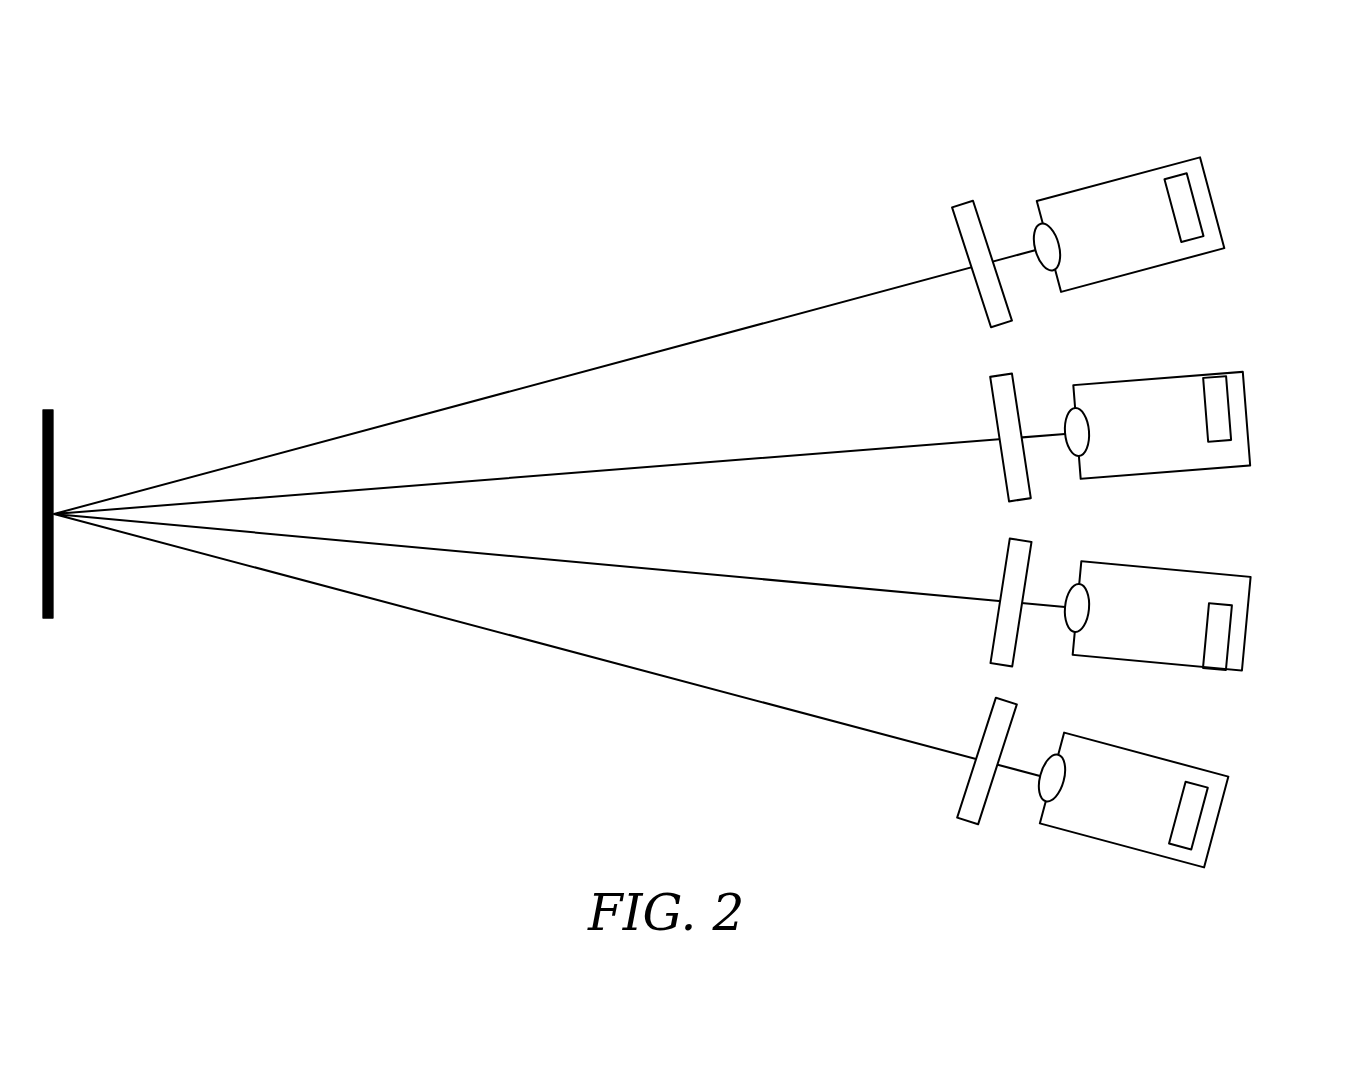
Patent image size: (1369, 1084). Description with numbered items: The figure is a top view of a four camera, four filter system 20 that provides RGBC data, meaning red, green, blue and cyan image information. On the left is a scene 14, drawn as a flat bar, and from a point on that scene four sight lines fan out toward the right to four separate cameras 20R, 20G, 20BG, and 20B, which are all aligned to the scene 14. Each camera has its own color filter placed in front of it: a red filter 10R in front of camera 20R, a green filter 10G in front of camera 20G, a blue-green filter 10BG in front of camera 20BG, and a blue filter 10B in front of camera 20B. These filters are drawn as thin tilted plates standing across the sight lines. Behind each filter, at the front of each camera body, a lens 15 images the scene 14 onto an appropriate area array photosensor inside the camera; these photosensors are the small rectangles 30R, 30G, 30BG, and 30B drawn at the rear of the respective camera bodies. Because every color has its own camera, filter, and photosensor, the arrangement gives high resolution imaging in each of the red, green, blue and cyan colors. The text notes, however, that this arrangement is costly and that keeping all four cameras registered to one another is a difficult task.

The scene 14 is at (52, 428).
The lens 15 is at (1037, 242).
The four camera, four filter system 20 is at (1107, 474).
The color filter 10B is at (955, 240).
The color filter 10BG is at (1002, 410).
The color filter 10G is at (1002, 570).
The color filter 10R is at (985, 725).
The camera 20B is at (1125, 218).
The camera 20BG is at (1206, 402).
The camera 20G is at (1203, 602).
The camera 20R is at (1177, 789).
The area array photosensor 30B is at (1190, 230).
The area array photosensor 30BG is at (1228, 404).
The area array photosensor 30G is at (1222, 607).
The area array photosensor 30R is at (1197, 803).